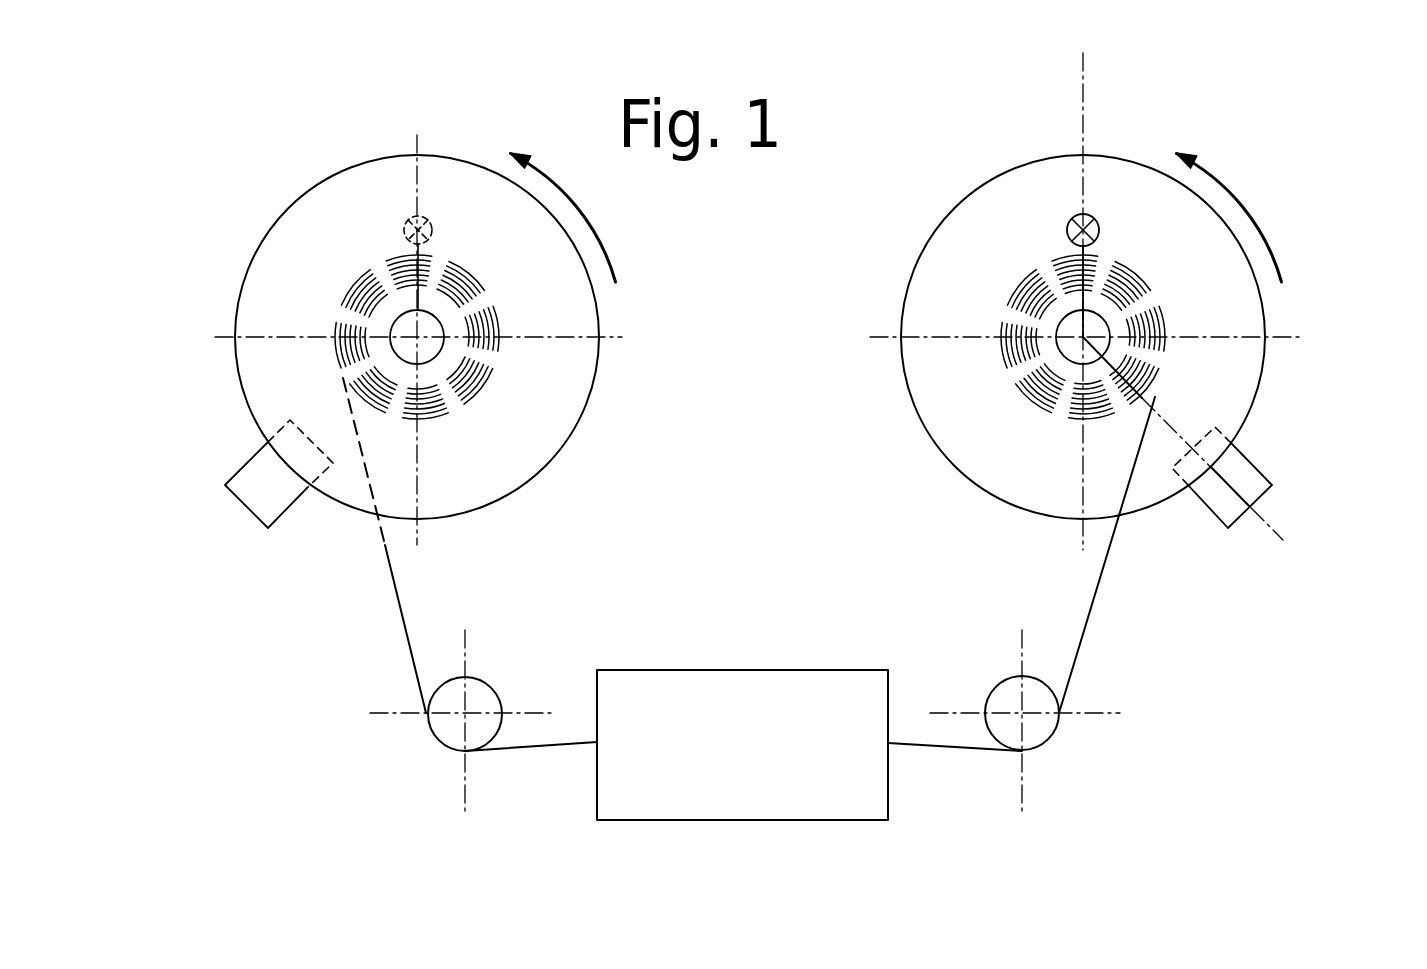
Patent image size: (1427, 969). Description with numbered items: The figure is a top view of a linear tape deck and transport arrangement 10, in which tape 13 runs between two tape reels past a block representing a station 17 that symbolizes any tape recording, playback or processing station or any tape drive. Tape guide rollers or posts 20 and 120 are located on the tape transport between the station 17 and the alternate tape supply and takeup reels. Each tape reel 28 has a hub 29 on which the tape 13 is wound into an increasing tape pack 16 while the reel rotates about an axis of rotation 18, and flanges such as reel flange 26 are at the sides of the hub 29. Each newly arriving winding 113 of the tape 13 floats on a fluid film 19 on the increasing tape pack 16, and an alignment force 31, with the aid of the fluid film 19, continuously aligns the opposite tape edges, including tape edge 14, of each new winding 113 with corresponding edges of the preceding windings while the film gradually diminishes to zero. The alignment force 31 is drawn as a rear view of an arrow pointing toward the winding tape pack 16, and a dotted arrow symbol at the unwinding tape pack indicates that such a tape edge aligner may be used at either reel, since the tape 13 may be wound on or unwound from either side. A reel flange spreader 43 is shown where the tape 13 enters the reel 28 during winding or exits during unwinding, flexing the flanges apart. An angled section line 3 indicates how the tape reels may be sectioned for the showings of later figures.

The section line 3 is at (1098, 63).
The linear tape deck and transport arrangement 10 is at (737, 428).
The tape 13 is at (1106, 628).
The tape edge 14 is at (1077, 555).
The tape pack 16 is at (1016, 399).
The station 17 is at (717, 762).
The axis of rotation 18 is at (968, 338).
The fluid film 19 is at (1050, 329).
The tape guide roller 20 is at (997, 684).
The reel flange 26 is at (1045, 337).
The tape reel 28 is at (948, 190).
The hub 29 is at (1222, 346).
The alignment force 31 is at (400, 232).
The reel flange spreader 43 is at (243, 506).
The new winding 113 is at (1113, 330).
The tape guide roller 120 is at (495, 683).